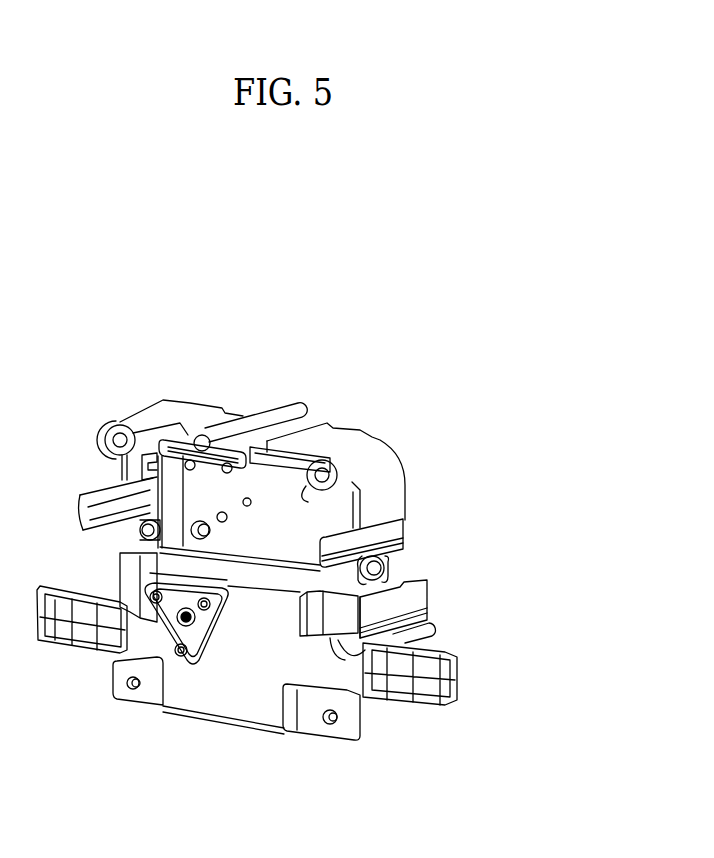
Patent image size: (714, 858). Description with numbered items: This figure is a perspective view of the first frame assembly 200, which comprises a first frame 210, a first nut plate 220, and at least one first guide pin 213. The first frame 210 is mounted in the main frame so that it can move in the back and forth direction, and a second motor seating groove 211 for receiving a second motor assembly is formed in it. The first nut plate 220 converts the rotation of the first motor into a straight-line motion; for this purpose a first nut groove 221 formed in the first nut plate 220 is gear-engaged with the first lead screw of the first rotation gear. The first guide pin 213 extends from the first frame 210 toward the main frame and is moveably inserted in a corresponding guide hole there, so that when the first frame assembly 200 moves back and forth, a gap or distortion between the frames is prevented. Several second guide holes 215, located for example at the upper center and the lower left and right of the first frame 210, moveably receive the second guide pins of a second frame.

The first frame assembly 200 is at (398, 370).
The first frame 210 is at (388, 495).
The second motor seating groove 211 is at (207, 486).
The first guide pin 213 is at (284, 410).
The second guide hole 215 is at (147, 530).
The first nut plate 220 is at (170, 630).
The first nut groove 221 is at (185, 615).